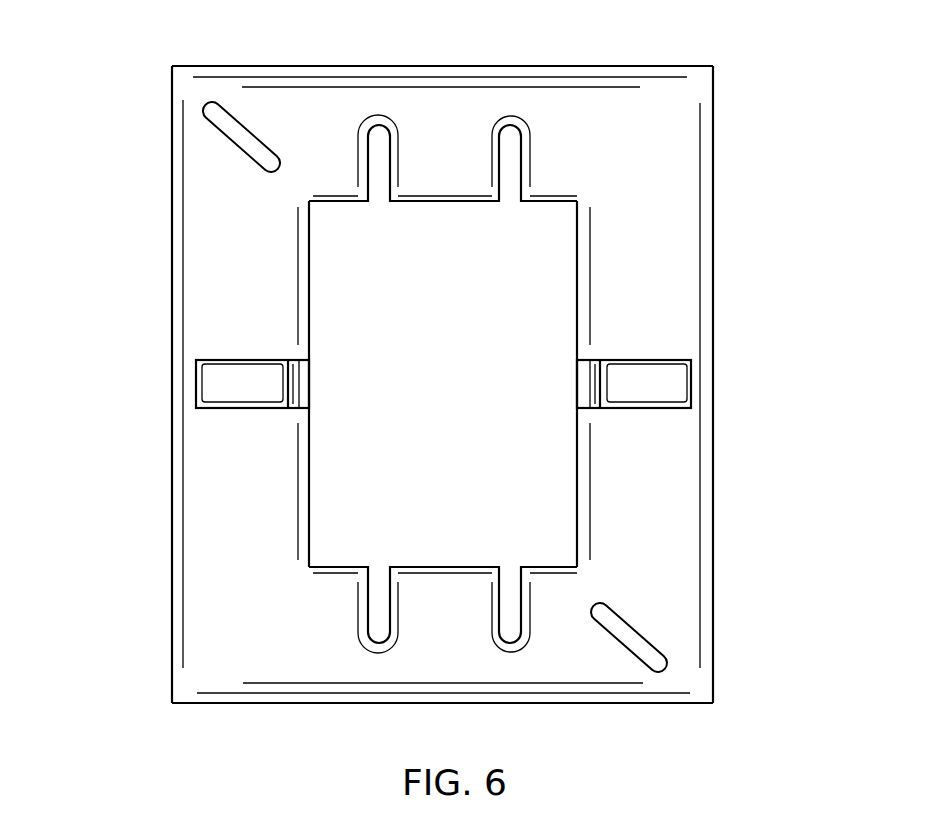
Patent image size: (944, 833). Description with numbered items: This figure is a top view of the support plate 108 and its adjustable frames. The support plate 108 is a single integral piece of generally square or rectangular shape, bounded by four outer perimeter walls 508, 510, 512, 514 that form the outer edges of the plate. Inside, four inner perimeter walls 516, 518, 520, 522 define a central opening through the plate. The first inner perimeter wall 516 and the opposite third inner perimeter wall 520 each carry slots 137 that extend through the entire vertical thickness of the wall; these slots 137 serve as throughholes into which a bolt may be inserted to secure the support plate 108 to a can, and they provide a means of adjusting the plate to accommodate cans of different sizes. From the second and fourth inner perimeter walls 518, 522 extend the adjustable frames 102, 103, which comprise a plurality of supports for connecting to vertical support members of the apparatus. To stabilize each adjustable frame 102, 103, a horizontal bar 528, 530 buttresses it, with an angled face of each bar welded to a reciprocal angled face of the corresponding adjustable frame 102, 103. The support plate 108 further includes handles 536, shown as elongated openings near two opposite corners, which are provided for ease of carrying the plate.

The support plate 108 is at (705, 73).
The outer perimeter wall 512 is at (248, 61).
The outer perimeter wall 510 is at (168, 570).
The outer perimeter wall 514 is at (717, 597).
The outer perimeter wall 508 is at (678, 709).
The handles 536 is at (223, 118).
The slot 137 is at (376, 183).
The third inner perimeter wall 520 is at (444, 209).
The first inner perimeter wall 516 is at (452, 563).
The second inner perimeter wall 518 is at (314, 463).
The fourth inner perimeter wall 522 is at (575, 288).
The horizontal bar 530 is at (205, 373).
The horizontal bar 528 is at (687, 367).
The adjustable frame 103 is at (305, 377).
The adjustable frame 102 is at (588, 383).